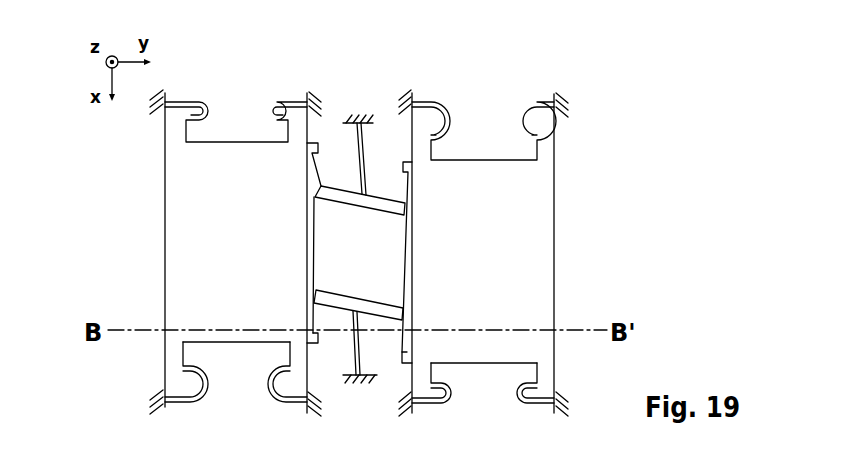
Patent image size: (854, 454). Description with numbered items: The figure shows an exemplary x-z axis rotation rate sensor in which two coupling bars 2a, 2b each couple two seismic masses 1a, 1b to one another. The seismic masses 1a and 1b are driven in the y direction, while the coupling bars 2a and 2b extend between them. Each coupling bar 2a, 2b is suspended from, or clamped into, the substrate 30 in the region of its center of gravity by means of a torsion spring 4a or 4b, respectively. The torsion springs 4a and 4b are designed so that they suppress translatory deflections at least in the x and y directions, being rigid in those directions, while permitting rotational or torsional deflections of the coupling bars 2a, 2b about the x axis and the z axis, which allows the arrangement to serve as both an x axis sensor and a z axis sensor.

The seismic mass 1a is at (159, 211).
The seismic mass 1b is at (562, 211).
The coupling bar 2a is at (388, 213).
The coupling bar 2b is at (337, 295).
The torsion spring 4a is at (373, 163).
The torsion spring 4b is at (346, 346).
The substrate 30 is at (404, 100).